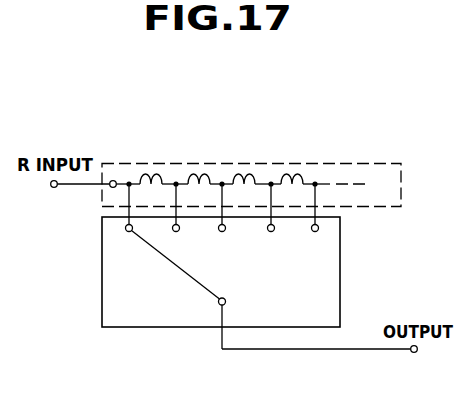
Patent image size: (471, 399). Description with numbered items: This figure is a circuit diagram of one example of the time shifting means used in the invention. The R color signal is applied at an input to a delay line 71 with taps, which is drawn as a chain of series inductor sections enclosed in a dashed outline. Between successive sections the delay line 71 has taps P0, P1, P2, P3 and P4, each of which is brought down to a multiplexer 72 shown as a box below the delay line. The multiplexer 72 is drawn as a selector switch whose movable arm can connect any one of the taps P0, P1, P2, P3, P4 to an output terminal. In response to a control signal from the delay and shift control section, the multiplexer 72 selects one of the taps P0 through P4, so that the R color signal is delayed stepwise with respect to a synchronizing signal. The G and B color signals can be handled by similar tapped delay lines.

The delay line 71 is at (273, 164).
The multiplexer 72 is at (250, 283).
The tap P0 is at (127, 232).
The tap P1 is at (178, 232).
The tap P2 is at (225, 232).
The tap P3 is at (273, 232).
The tap P4 is at (319, 229).